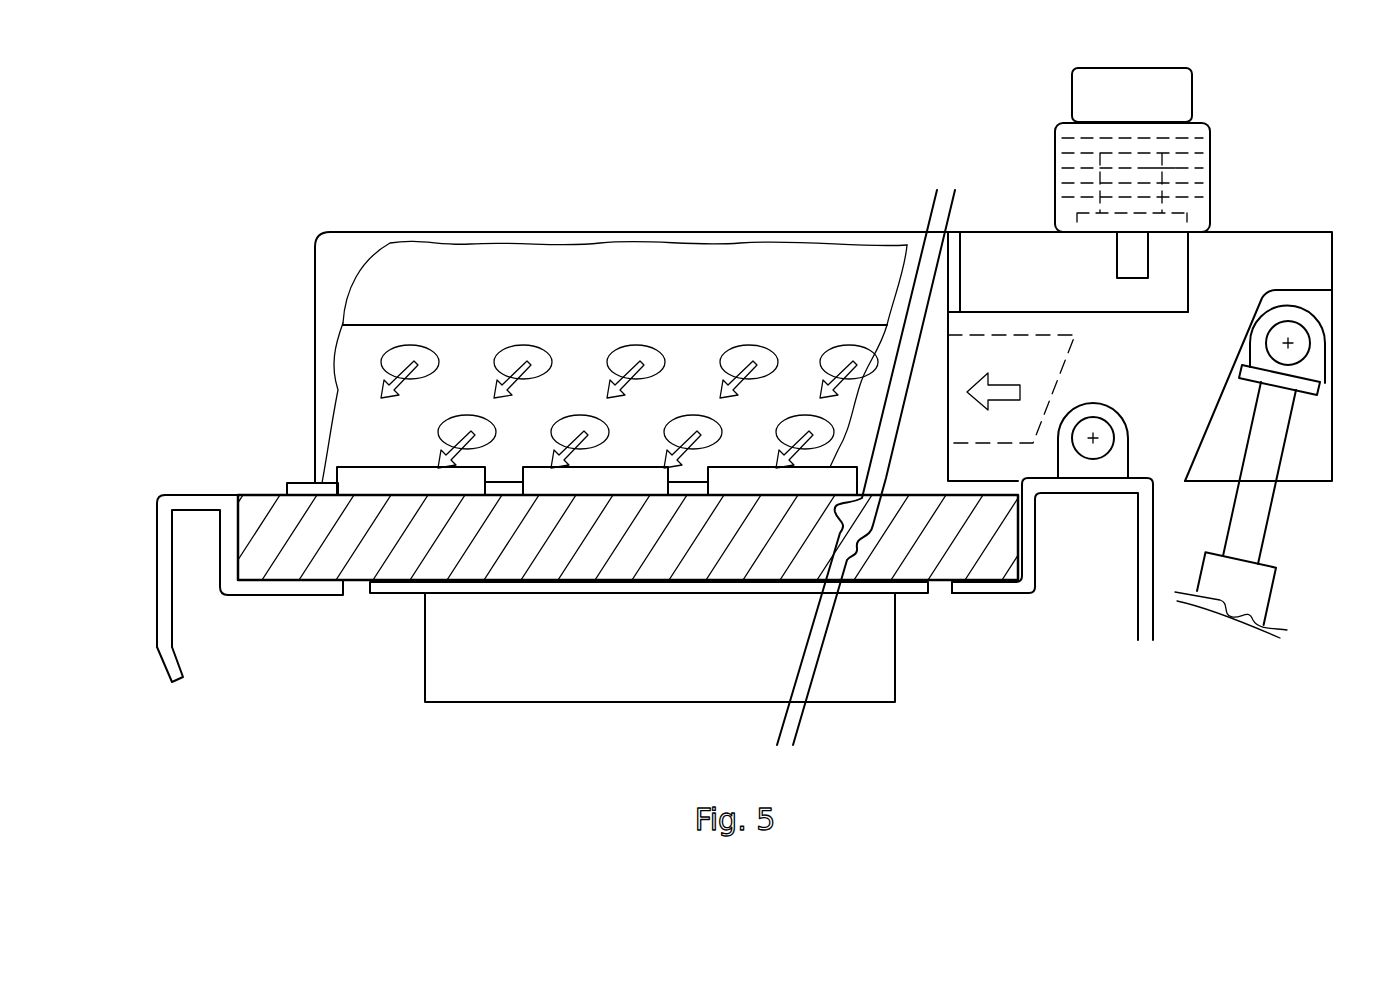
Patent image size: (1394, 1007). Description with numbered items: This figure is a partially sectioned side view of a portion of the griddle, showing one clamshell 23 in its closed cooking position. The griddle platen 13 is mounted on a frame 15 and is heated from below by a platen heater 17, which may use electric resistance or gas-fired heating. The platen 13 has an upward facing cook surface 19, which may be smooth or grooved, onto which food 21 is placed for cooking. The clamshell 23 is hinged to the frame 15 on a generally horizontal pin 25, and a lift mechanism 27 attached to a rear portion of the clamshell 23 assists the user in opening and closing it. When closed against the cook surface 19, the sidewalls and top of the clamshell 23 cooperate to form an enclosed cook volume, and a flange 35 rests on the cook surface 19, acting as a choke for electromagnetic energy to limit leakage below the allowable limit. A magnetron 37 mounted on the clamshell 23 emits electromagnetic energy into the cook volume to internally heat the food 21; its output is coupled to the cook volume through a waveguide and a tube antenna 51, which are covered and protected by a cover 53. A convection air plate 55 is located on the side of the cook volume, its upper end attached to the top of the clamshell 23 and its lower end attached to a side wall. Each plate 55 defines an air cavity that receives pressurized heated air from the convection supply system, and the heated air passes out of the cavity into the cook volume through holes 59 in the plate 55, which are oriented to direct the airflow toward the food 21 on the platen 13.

The griddle platen 13 is at (320, 553).
The frame 15 is at (166, 618).
The platen heater 17 is at (878, 667).
The cook surface 19 is at (257, 494).
The food 21 is at (324, 484).
The clamshell 23 is at (495, 232).
The pin 25 is at (1095, 447).
The lift mechanism 27 is at (1262, 518).
The flange 35 is at (292, 483).
The magnetron 37 is at (1180, 88).
The tube antenna 51 is at (1127, 250).
The cover 53 is at (960, 273).
The convection air plate 55 is at (812, 345).
The holes 59 is at (628, 350).